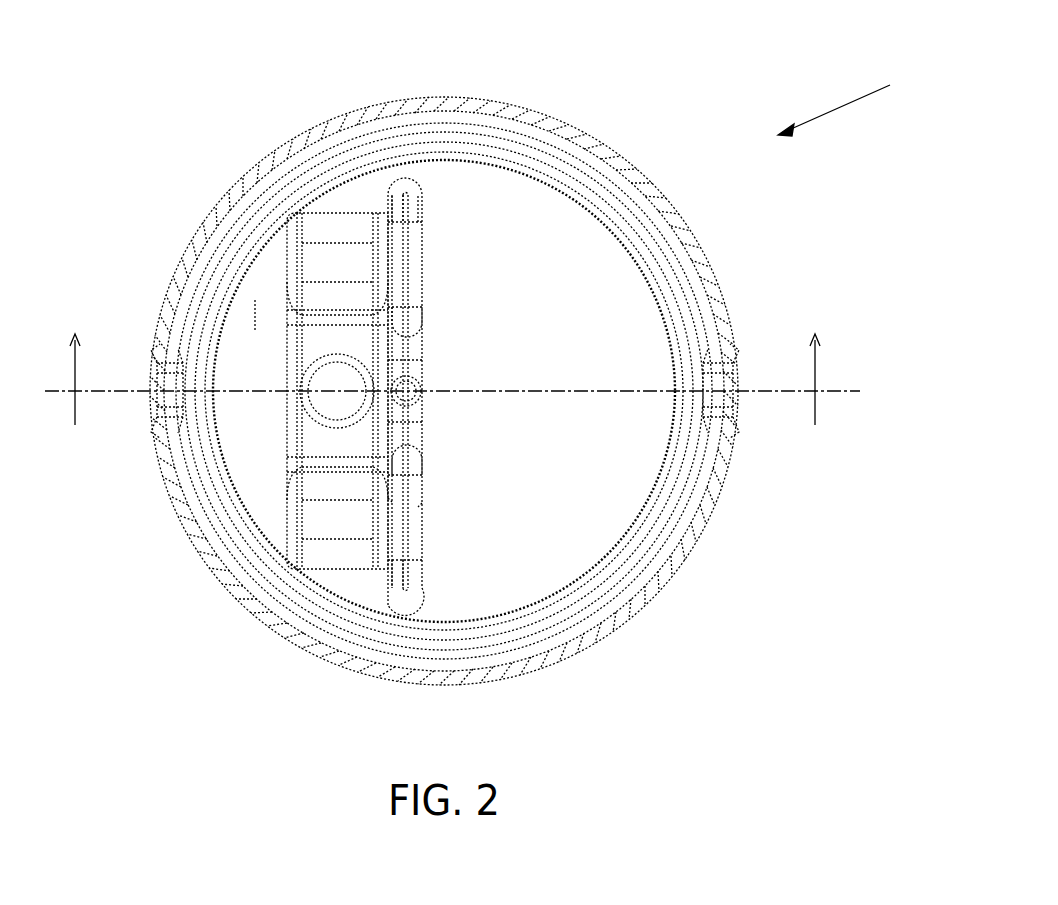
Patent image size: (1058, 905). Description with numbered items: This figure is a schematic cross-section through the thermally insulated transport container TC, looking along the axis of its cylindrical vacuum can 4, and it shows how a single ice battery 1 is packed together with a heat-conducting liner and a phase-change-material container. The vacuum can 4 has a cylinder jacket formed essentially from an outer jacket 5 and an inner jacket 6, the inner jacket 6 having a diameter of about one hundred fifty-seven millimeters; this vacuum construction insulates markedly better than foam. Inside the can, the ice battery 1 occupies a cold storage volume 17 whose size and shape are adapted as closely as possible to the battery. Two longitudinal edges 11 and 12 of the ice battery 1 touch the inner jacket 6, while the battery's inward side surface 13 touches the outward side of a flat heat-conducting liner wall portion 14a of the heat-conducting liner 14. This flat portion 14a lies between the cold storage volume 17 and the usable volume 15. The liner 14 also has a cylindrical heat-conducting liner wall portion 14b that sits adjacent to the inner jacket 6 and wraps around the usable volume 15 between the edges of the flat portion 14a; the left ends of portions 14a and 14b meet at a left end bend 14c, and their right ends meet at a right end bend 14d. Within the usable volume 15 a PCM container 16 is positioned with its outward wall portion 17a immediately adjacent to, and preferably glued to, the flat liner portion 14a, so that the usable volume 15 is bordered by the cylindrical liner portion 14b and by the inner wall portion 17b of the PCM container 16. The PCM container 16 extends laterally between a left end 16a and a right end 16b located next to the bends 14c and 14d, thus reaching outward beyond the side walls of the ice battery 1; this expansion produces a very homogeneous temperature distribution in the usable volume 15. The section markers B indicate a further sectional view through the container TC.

The ice storage battery 1 is at (327, 520).
The vacuum can 4 is at (658, 283).
The outer jacket 5 is at (638, 242).
The inner jacket 6 is at (245, 239).
The longitudinal edge 11 is at (247, 605).
The longitudinal edge 12 is at (287, 213).
The inward side surface 13 is at (387, 357).
The heat-conducting liner 14 is at (653, 287).
The flat heat-conducting liner wall portion 14a is at (386, 198).
The cylindrical heat-conducting liner wall portion 14b is at (523, 177).
The left end bend 14c is at (390, 607).
The right end bend 14d is at (390, 205).
The usable volume 15 is at (613, 475).
The PCM container 16 is at (403, 530).
The left end of PCM container 16a is at (405, 580).
The right end of PCM container 16b is at (405, 202).
The cold storage volume 17 is at (258, 315).
The outward wall portion 17a is at (387, 502).
The inner wall portion 17b is at (423, 507).
The transport container TC is at (860, 98).
The section line B- B is at (446, 379).